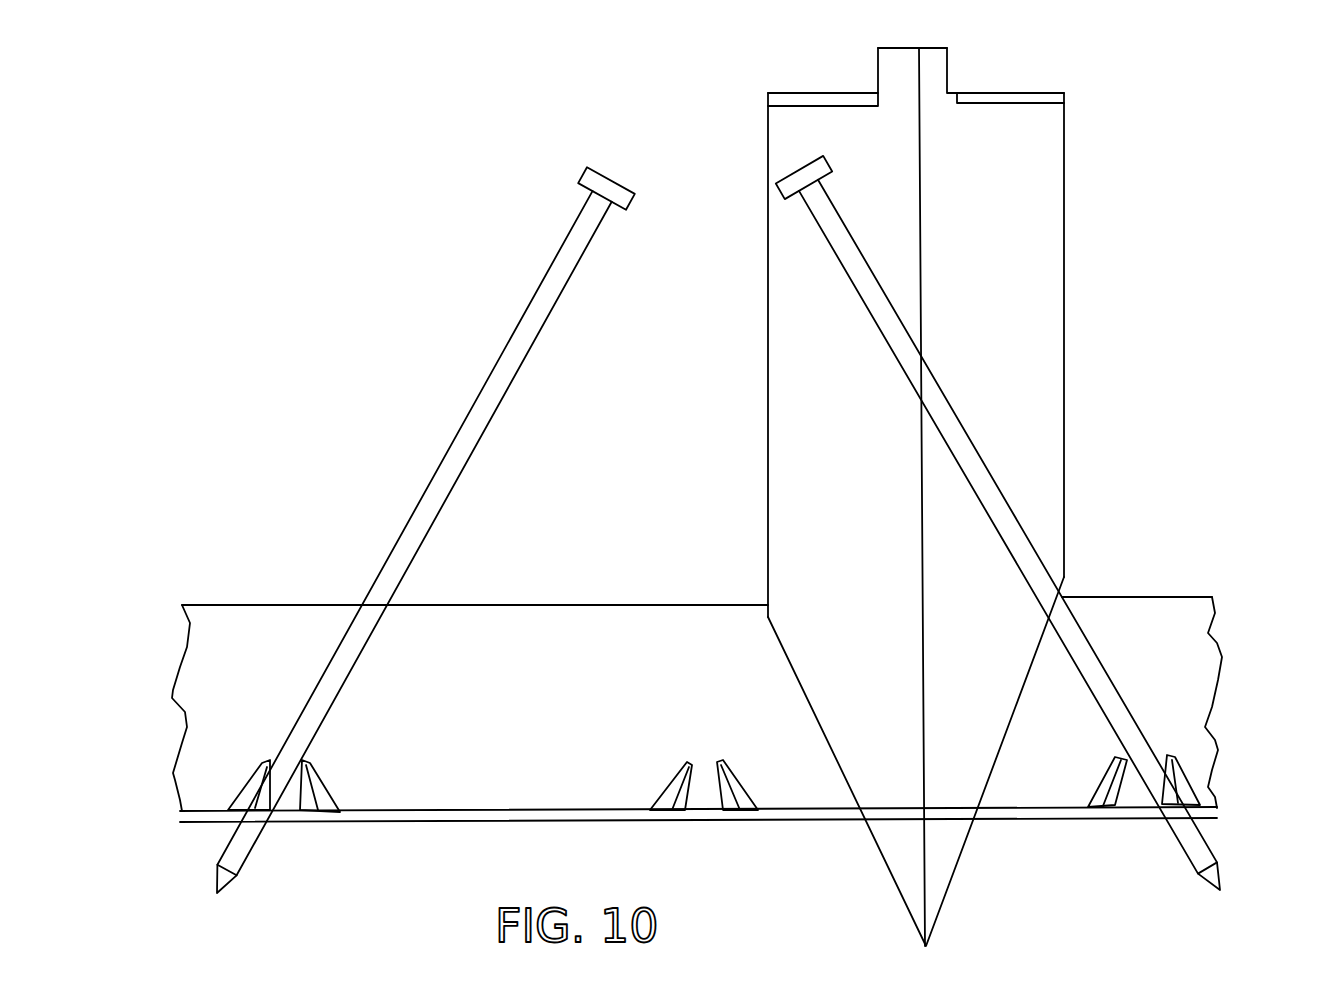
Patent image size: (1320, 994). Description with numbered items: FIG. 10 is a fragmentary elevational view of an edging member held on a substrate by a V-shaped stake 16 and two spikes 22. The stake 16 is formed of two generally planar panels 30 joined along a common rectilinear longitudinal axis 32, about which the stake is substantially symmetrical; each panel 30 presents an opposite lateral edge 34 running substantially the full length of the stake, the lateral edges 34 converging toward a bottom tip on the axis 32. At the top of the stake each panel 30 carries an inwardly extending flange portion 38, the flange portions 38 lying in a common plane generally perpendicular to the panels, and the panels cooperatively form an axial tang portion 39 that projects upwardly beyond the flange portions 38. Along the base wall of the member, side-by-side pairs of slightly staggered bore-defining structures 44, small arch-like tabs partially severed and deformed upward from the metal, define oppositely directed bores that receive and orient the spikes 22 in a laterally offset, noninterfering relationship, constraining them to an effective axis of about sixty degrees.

The V-shaped stake 16 is at (949, 484).
The spike 22 is at (480, 425).
The planar panel 30 is at (1050, 380).
The longitudinal axis 32 is at (922, 243).
The lateral edge 34 is at (1063, 172).
The flange portion 38 is at (842, 70).
The axial tang portion 39 is at (937, 65).
The bore-defining structure 44 is at (258, 790).